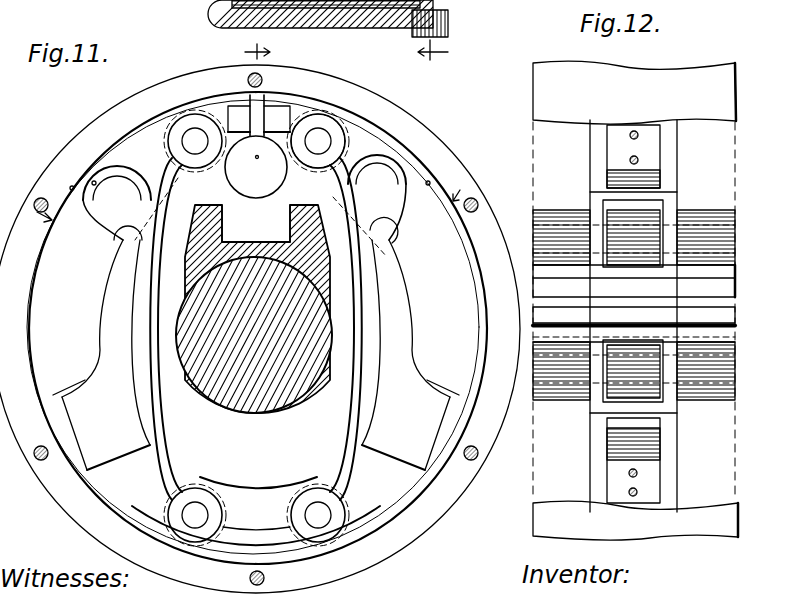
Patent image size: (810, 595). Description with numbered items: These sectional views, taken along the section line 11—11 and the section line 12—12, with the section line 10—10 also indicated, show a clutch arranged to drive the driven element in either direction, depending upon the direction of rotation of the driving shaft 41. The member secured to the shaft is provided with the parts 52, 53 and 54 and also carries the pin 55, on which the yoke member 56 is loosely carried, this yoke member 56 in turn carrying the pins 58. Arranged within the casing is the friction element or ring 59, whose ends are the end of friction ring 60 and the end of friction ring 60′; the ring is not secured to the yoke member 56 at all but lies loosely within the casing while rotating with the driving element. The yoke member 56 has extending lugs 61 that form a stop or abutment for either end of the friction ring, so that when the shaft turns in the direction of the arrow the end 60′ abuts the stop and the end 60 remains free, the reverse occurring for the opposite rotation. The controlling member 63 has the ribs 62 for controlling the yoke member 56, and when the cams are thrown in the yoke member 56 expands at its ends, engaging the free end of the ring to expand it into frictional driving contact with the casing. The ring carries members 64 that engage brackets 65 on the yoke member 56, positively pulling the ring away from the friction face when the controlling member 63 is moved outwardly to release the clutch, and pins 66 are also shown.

In FIG. 11, the driving shaft 41 is at (310, 398).
In FIG. 11, the part 52 is at (111, 278).
In FIG. 11, the part 53 is at (258, 207).
In FIG. 11, the part 54 is at (62, 397).
In FIG. 11, the pin 55 is at (315, 125).
In FIG. 11, the yoke member 56 is at (338, 28).
In FIG. 11, the pins 58 is at (182, 125).
In FIG. 12, the pins 58 is at (620, 225).
In FIG. 11, the friction element or ring 59 is at (35, 335).
In FIG. 12, the friction element or ring 59 is at (677, 75).
In FIG. 11, the end of friction ring 60 is at (258, 304).
In FIG. 12, the end of friction ring 60 is at (645, 304).
In FIG. 11, the end of friction ring 60' is at (281, 100).
In FIG. 11, the extending lugs 61 is at (242, 98).
In FIG. 12, the extending lugs 61 is at (732, 313).
In FIG. 11, the ribs 62 is at (210, 240).
In FIG. 11, the controlling member 63 is at (247, 413).
In FIG. 11, the members 64 is at (120, 178).
In FIG. 12, the members 64 is at (660, 172).
In FIG. 11, the brackets 65 is at (125, 232).
In FIG. 12, the brackets 65 is at (660, 167).
In FIG. 11, the pins 66 is at (93, 182).
In FIG. 12, the pins 66 is at (636, 160).
In FIG. 11, the section line 10 is at (257, 45).
In FIG. 11, the section line 11 is at (445, 50).
In FIG. 11, the section line 12 is at (241, 208).